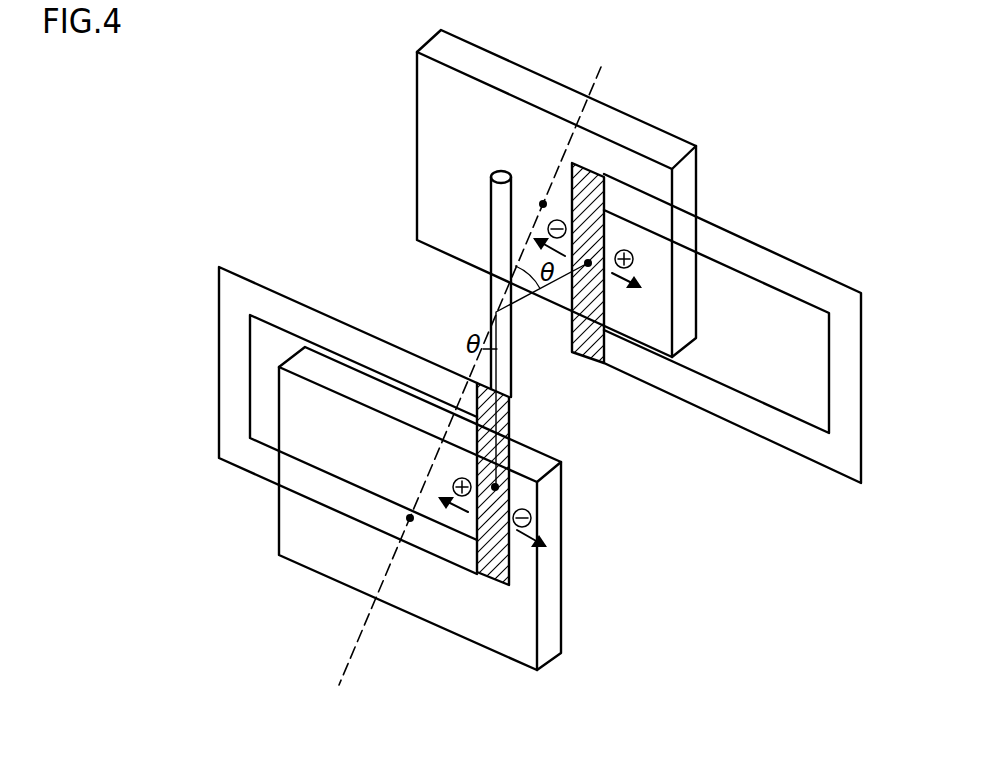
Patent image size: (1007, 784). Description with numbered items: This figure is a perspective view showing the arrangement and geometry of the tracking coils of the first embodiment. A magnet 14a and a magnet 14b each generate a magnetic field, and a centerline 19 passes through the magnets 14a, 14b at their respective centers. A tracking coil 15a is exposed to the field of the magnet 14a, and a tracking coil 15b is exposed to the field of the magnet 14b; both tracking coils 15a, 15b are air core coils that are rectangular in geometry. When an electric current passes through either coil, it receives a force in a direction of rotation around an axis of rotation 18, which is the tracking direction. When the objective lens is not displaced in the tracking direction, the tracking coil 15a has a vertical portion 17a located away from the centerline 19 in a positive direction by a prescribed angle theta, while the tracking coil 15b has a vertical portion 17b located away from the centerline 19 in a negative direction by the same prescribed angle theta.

The magnet 14a is at (623, 130).
The magnet 14b is at (517, 612).
The tracking coil 15a is at (720, 405).
The tracking coil 15b is at (268, 303).
The vertical portion 17a is at (591, 350).
The vertical portion 17b is at (507, 428).
The axis of rotation 18 is at (495, 190).
The centerline 19 is at (360, 633).